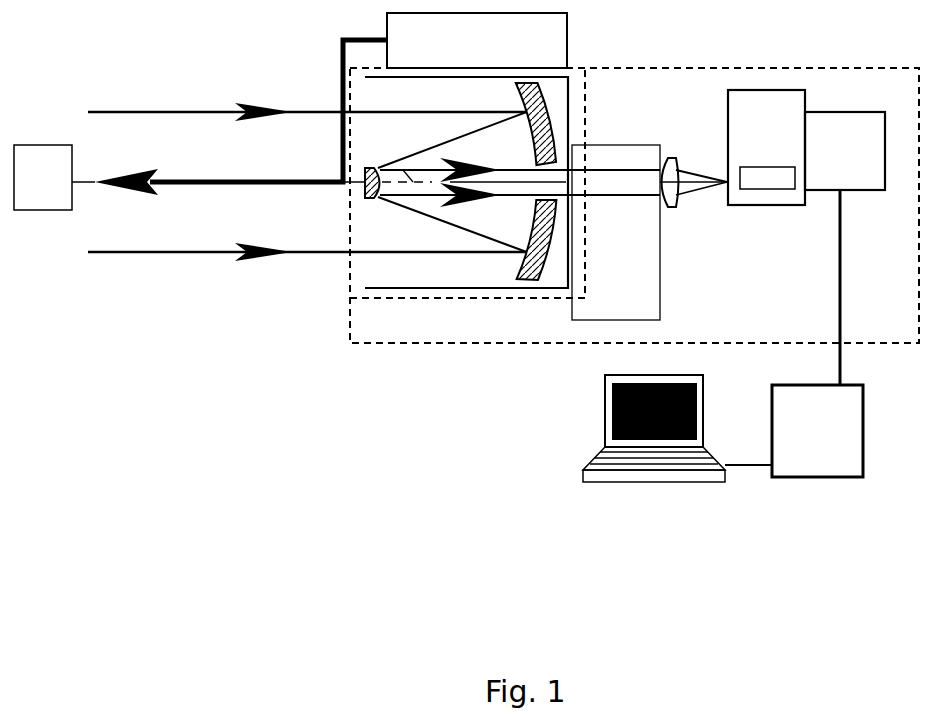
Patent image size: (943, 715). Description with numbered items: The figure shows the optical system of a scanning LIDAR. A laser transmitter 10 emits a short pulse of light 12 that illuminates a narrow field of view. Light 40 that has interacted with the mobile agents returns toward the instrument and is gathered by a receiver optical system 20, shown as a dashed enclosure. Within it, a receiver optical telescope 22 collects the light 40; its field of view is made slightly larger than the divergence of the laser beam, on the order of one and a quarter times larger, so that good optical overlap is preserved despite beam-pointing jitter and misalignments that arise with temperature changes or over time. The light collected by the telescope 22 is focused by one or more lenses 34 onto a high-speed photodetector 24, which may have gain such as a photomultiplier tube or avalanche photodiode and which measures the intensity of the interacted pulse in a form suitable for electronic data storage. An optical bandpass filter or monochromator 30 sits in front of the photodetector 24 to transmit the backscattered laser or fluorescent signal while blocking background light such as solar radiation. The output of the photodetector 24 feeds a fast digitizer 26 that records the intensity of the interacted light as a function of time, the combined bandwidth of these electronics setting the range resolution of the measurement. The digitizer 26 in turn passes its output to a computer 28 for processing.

The laser transmitter 10 is at (486, 57).
The short pulse of light 12 is at (328, 57).
The receiver optical system 20 is at (783, 327).
The receiver optical telescope 22 is at (486, 111).
The high-speed photodetector 24 is at (845, 151).
The fast digitizer 26 is at (817, 333).
The computer 28 is at (652, 486).
The optical bandpass filter or monochromator 30 is at (766, 147).
The lenses 34 is at (672, 143).
The light 40 is at (127, 100).